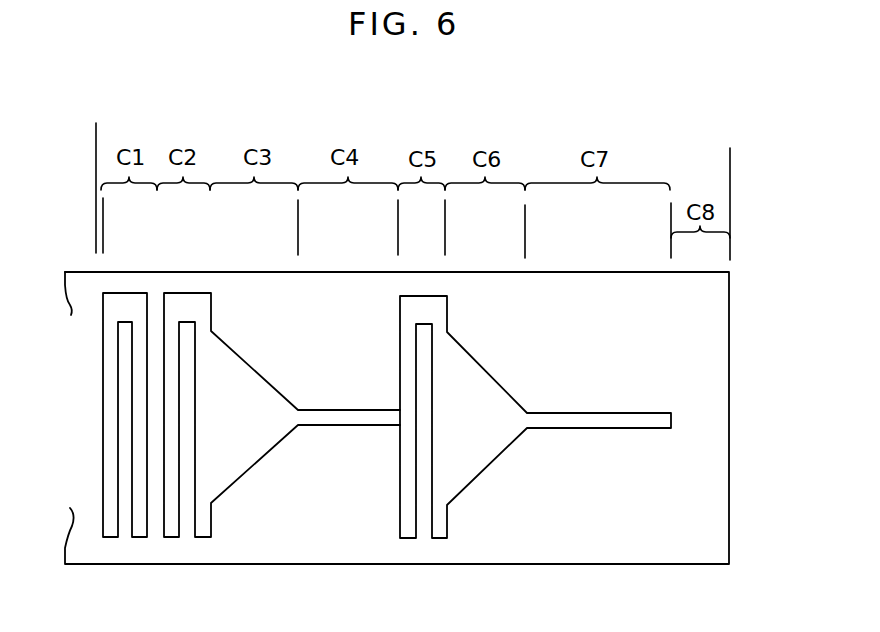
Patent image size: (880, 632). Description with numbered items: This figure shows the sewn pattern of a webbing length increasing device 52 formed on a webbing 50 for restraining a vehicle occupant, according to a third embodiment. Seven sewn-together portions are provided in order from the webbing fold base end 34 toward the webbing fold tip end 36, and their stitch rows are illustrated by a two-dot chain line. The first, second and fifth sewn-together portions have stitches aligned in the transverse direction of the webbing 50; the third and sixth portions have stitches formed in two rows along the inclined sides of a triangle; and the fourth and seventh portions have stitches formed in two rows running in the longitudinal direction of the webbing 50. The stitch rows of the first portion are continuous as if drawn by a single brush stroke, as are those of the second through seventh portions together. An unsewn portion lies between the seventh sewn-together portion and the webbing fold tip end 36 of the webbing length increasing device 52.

The webbing fold base end 34 is at (95, 170).
The webbing fold tip end 36 is at (731, 196).
The webbing 50 is at (744, 391).
The webbing length increasing device 52 is at (430, 566).